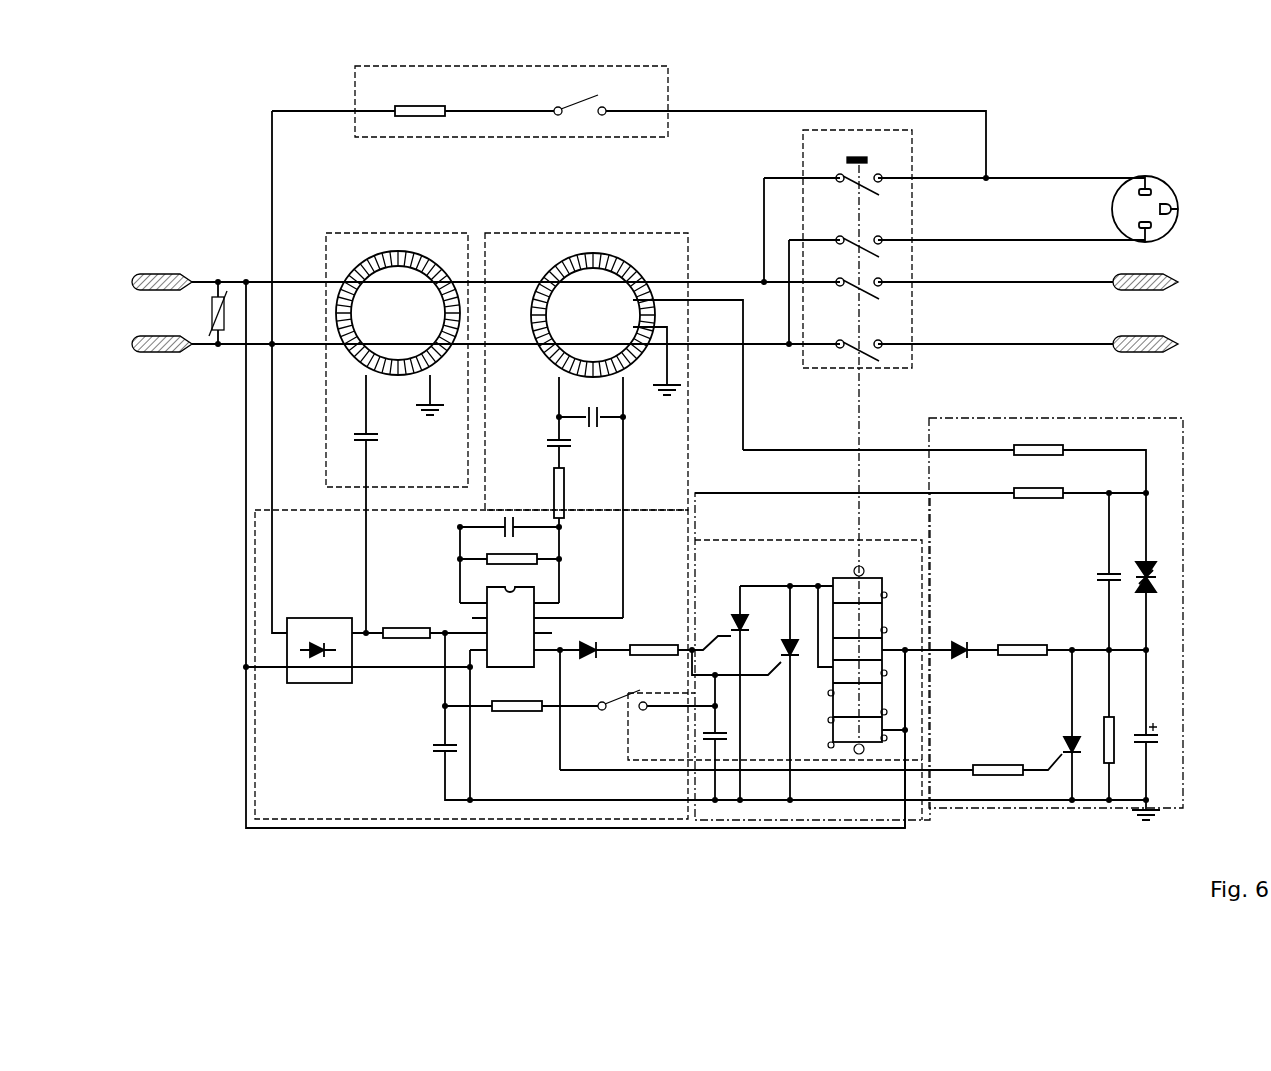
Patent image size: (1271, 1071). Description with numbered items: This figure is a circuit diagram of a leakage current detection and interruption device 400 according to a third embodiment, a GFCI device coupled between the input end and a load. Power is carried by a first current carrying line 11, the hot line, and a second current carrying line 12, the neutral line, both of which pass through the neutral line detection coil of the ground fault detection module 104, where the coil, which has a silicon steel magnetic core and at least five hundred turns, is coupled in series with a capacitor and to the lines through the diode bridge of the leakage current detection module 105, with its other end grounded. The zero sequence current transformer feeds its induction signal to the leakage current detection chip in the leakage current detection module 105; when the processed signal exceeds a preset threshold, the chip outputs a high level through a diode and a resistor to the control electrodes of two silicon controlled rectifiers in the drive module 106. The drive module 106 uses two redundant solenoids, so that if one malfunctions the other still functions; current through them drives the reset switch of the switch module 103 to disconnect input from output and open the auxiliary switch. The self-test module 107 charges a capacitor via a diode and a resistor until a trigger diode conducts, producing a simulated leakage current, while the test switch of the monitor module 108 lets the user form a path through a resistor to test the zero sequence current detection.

The leakage current detection and interruption device 400 is at (1240, 84).
The first current carrying line 11 is at (190, 278).
The second current carrying line 12 is at (195, 352).
The switch module 103 is at (866, 130).
The ground fault detection module 104 is at (362, 233).
The leakage current detection module 105 is at (608, 820).
The drive module 106 is at (822, 820).
The self-test module 107 is at (1184, 418).
The monitor module 108 is at (590, 66).